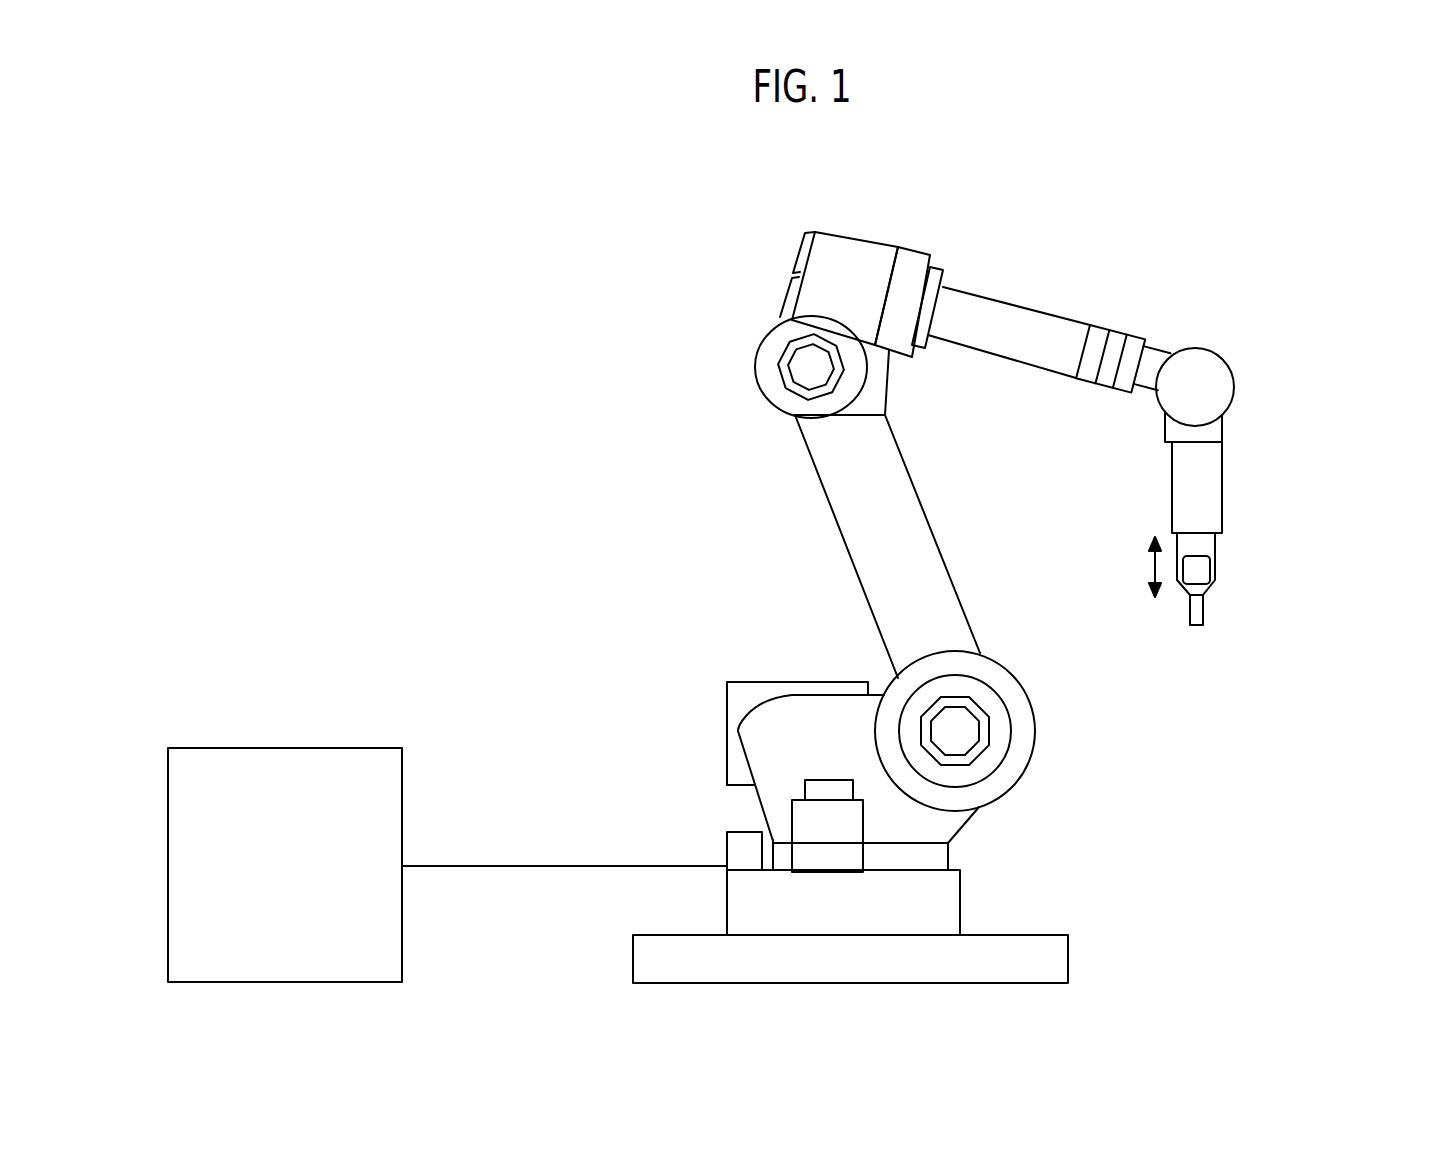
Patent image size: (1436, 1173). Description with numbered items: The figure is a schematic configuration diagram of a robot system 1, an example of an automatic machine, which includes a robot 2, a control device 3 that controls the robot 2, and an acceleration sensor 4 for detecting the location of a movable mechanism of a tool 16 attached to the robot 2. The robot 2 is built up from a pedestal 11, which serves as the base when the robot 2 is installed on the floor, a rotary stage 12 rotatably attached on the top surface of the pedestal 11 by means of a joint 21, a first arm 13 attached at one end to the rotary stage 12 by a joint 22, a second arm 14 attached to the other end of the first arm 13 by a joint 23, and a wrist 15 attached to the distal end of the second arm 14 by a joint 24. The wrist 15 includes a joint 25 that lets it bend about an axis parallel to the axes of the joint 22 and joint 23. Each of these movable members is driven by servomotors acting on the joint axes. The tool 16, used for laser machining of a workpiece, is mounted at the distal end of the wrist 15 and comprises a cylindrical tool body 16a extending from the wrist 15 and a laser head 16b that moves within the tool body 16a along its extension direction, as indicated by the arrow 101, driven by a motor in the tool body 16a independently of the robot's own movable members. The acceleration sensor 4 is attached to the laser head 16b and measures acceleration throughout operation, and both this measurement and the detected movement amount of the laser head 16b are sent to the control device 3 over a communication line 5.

The robot system 1 is at (1366, 912).
The robot 2 is at (645, 201).
The control device 3 is at (403, 930).
The acceleration sensor 4 is at (1210, 570).
The communication line 5 is at (515, 865).
The pedestal 11 is at (963, 902).
The rotary stage 12 is at (967, 830).
The first arm 13 is at (933, 535).
The second arm 14 is at (1010, 360).
The wrist 15 is at (1184, 279).
The tool 16 is at (1283, 533).
The tool body 16a is at (1225, 485).
The laser head 16b is at (1217, 553).
The joint 21 is at (953, 853).
The joint 22 is at (990, 727).
The joint 23 is at (777, 357).
The joint 24 is at (1138, 336).
The joint 25 is at (1196, 384).
The arrow 101 is at (1152, 568).